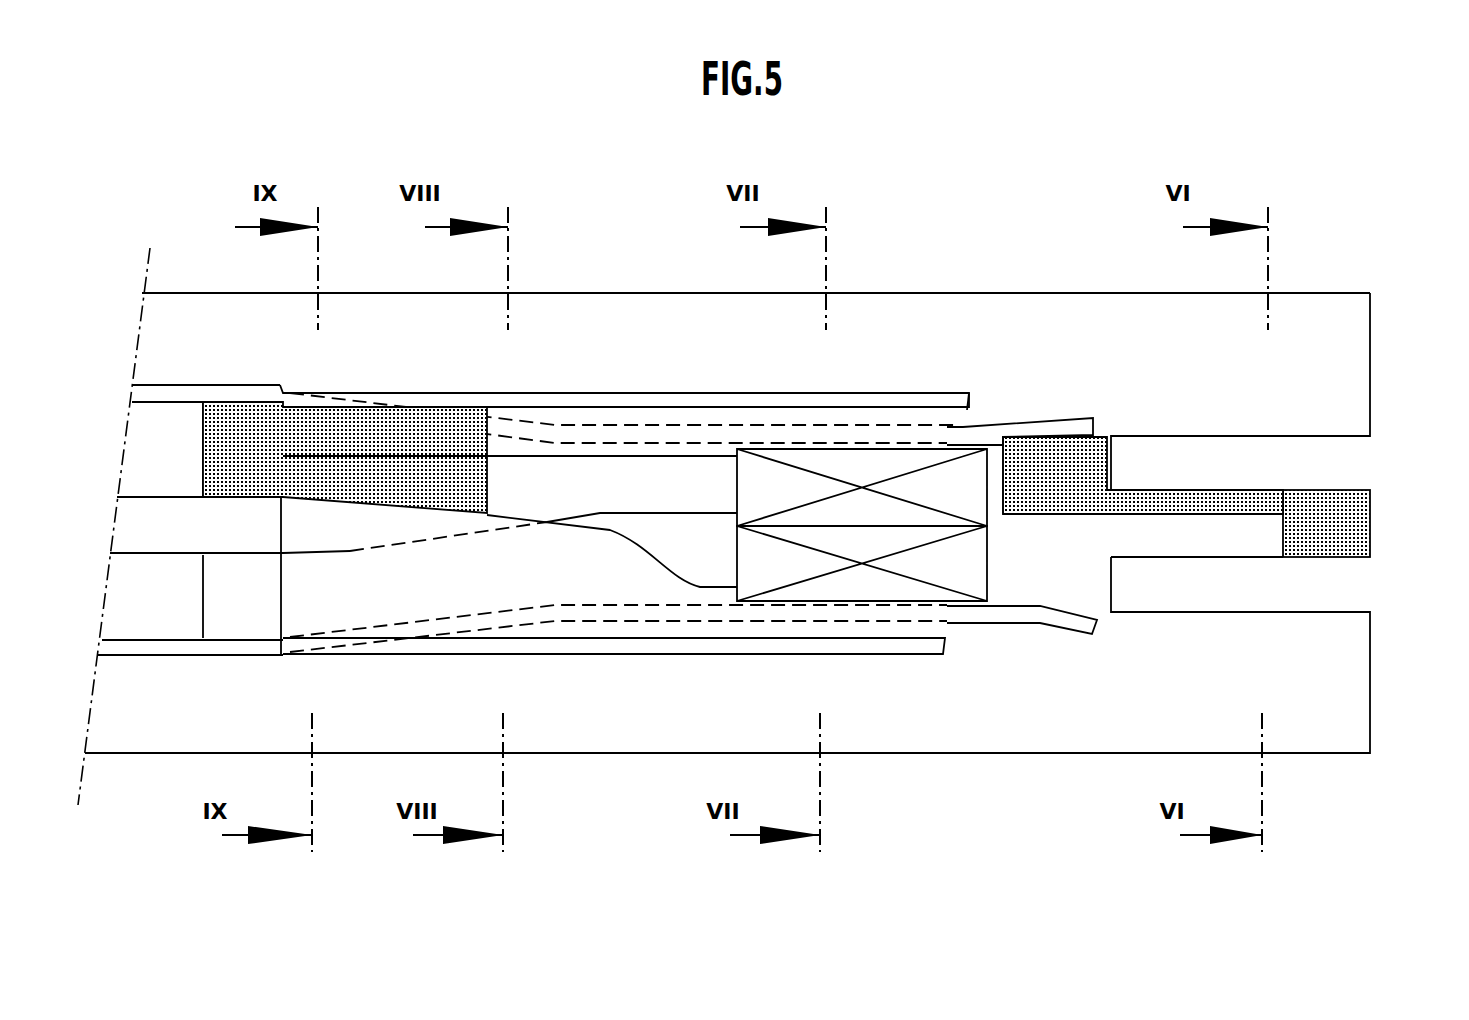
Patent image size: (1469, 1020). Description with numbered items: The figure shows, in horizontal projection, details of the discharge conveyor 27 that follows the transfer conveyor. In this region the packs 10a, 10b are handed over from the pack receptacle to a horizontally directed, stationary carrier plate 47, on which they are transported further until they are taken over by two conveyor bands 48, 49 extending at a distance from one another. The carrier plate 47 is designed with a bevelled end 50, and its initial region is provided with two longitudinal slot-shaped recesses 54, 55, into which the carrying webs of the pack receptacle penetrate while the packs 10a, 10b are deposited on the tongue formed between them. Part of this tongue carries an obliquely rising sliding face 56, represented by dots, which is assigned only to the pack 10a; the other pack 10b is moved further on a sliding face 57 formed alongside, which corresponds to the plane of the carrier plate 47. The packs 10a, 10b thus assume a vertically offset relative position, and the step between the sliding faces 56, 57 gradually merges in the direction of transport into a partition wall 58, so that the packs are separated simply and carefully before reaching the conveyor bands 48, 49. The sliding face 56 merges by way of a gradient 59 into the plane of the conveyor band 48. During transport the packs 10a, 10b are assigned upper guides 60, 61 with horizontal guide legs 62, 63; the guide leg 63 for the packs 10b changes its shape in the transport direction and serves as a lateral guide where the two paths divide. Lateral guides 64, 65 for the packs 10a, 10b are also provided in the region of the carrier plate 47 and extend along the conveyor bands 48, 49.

The discharge conveyor 27 is at (668, 208).
The carrier plate 47 is at (698, 770).
The conveyor band 48 is at (147, 433).
The conveyor band 49 is at (132, 577).
The bevelled end 50 is at (1349, 533).
The slot-shaped recess 54 is at (1327, 462).
The slot-shaped recess 55 is at (1349, 597).
The sliding face 56 is at (1057, 477).
The sliding face 57 is at (1145, 600).
The partition wall 58 is at (140, 513).
The gradient 59 is at (256, 437).
The upper guide 60 is at (604, 375).
The upper guide 61 is at (576, 665).
The guide leg 62 is at (697, 456).
The guide leg 63 is at (658, 563).
The lateral guide 64 is at (990, 442).
The lateral guide 65 is at (197, 385).
The pack 10a is at (873, 477).
The pack 10b is at (873, 573).